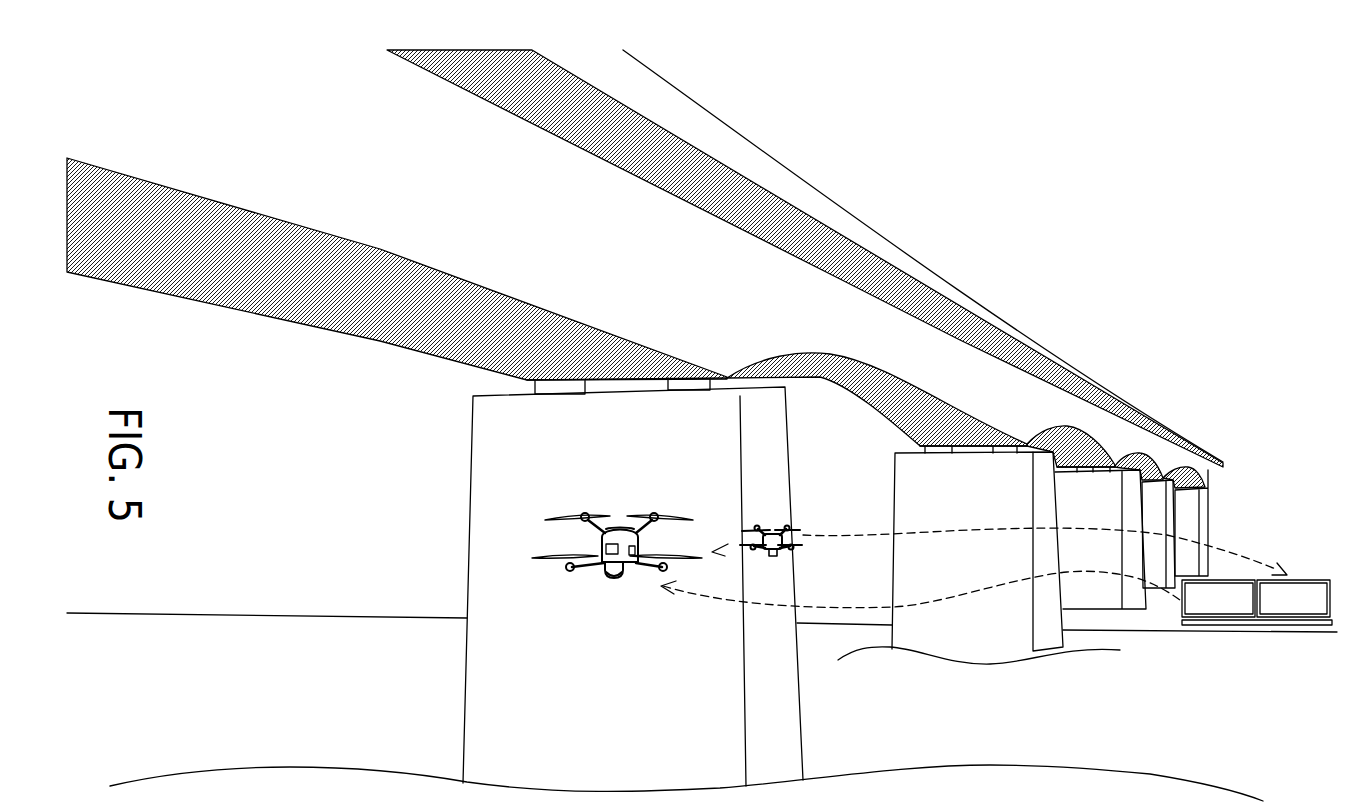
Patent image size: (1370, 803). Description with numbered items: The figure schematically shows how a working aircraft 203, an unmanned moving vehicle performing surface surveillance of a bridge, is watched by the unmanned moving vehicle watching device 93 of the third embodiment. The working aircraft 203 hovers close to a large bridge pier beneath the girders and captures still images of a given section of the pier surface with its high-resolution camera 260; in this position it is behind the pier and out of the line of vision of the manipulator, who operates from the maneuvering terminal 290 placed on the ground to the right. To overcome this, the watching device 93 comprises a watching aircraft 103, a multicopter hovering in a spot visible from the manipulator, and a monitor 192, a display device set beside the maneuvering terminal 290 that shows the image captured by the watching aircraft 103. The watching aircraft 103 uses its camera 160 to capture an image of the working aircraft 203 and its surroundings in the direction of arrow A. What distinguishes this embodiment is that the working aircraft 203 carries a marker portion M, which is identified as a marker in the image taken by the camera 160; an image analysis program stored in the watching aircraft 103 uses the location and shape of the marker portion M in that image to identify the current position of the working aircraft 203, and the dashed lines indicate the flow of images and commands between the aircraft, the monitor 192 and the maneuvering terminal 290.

The marker portion M is at (602, 548).
The working aircraft 203 is at (620, 535).
The high-resolution camera 260 is at (612, 578).
The arrow (image capturing direction) A is at (728, 545).
The watching aircraft 103 is at (773, 527).
The unmanned moving vehicle watching device 93 is at (1293, 617).
The camera 160 is at (773, 556).
The maneuvering terminal 290 is at (1220, 617).
The monitor 192 is at (1293, 642).